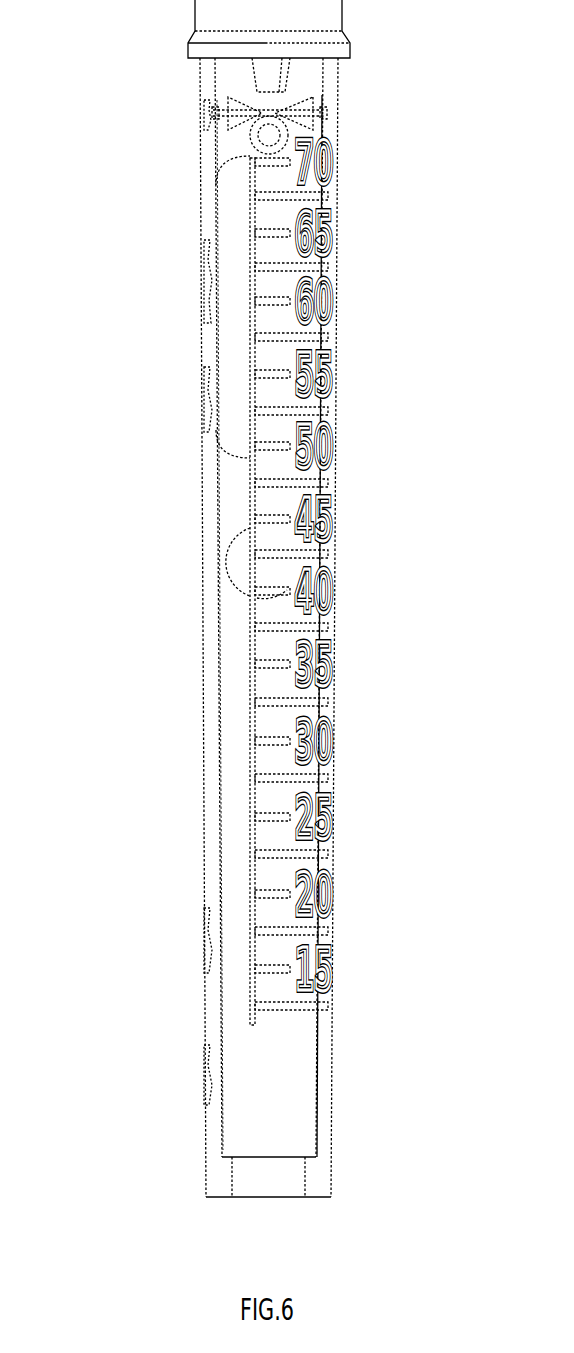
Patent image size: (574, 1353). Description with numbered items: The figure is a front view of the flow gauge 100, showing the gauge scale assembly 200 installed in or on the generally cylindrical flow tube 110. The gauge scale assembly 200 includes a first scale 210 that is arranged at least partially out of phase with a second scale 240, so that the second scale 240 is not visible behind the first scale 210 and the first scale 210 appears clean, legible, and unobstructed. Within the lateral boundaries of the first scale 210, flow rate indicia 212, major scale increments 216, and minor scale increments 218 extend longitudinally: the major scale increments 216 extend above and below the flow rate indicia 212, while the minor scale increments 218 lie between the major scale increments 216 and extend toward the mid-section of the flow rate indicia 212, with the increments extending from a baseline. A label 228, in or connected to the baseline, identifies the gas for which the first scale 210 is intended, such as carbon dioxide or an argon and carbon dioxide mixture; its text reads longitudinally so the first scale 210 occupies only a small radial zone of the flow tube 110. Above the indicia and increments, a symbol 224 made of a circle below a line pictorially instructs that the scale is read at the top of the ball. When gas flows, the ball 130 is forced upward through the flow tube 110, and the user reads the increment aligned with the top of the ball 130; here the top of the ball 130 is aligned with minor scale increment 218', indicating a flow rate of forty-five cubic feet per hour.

The flow gauge 100 is at (202, 627).
The generally cylindrical flow tube 110 is at (303, 46).
The ball 130 is at (316, 563).
The gauge scale assembly 200 is at (205, 607).
The first scale 210 is at (337, 577).
The flow rate indicia 212 is at (338, 897).
The major scale increments 216 is at (328, 796).
The minor scale increments 218 is at (330, 955).
The minor scale increment 218' is at (341, 538).
The symbol 224 is at (317, 126).
The label 228 is at (170, 602).
The second scale 240 is at (170, 625).